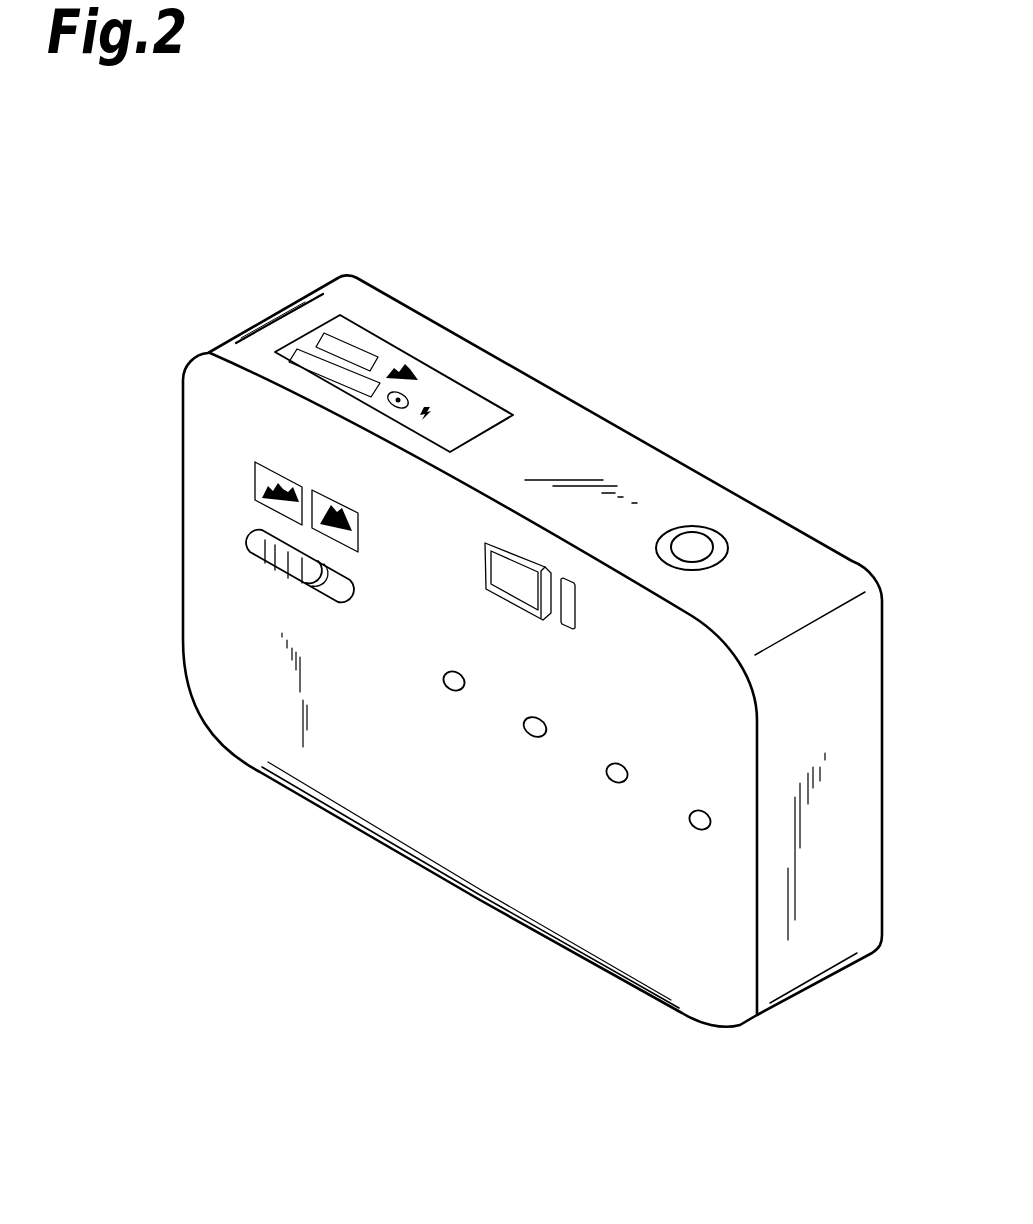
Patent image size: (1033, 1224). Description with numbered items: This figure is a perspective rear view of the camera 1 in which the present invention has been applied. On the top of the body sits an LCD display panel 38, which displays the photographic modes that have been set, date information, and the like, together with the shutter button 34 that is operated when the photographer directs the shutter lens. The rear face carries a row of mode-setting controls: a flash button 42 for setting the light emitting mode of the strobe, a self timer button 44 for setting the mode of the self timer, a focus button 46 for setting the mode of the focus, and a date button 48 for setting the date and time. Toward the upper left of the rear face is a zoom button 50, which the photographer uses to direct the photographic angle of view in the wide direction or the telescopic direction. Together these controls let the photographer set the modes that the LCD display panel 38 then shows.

The camera 1 is at (613, 394).
The shutter button 34 is at (692, 543).
The LCD display panel 38 is at (478, 410).
The flash button 42 is at (446, 668).
The self timer button 44 is at (526, 713).
The focus button 46 is at (608, 760).
The date button 48 is at (691, 806).
The zoom button 50 is at (262, 556).